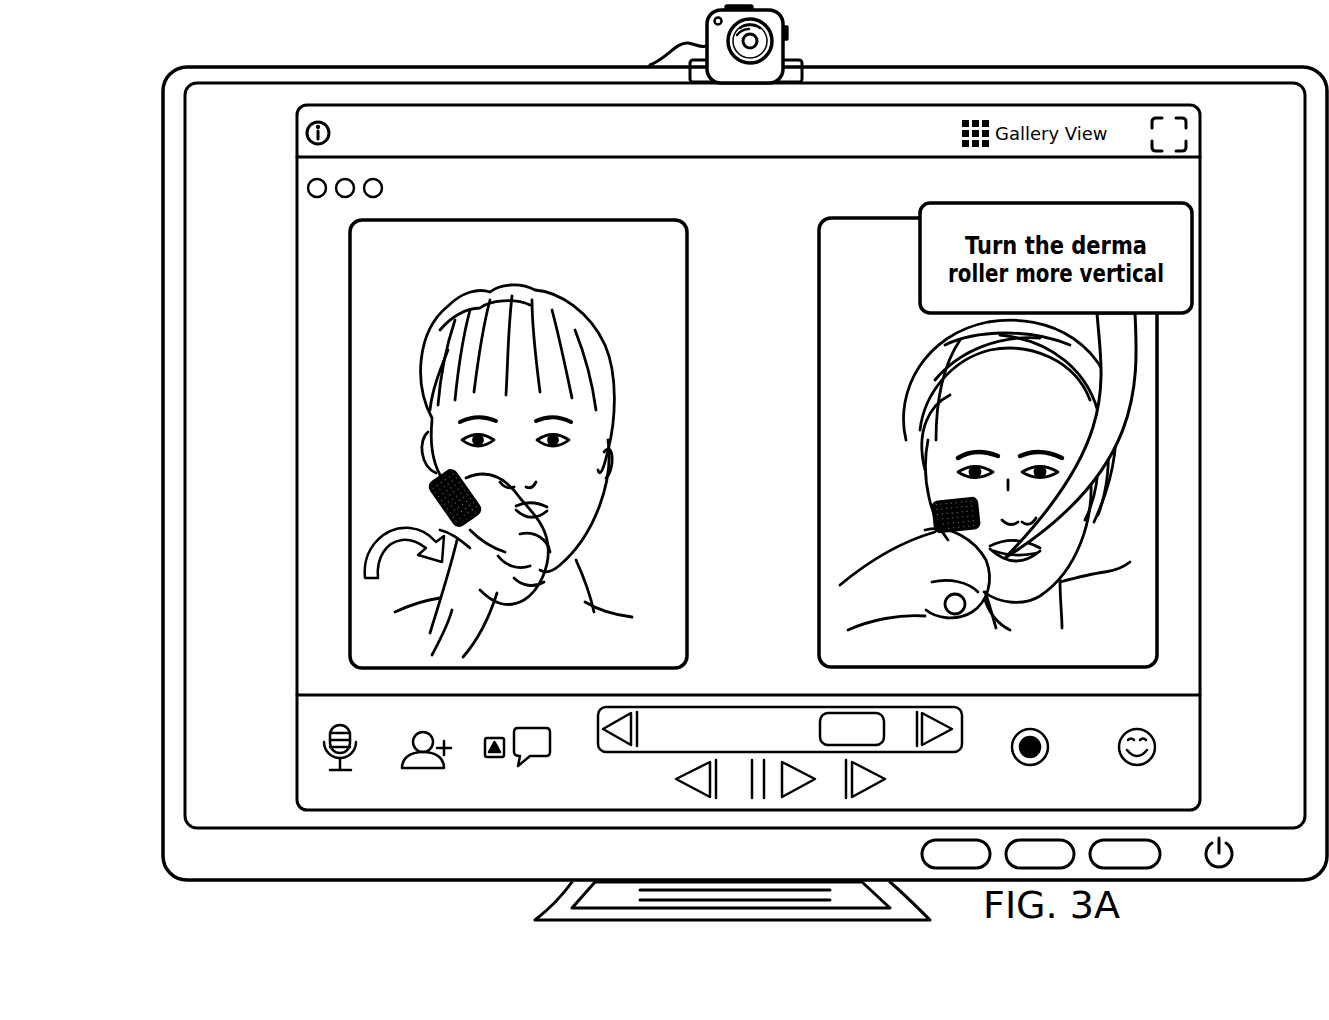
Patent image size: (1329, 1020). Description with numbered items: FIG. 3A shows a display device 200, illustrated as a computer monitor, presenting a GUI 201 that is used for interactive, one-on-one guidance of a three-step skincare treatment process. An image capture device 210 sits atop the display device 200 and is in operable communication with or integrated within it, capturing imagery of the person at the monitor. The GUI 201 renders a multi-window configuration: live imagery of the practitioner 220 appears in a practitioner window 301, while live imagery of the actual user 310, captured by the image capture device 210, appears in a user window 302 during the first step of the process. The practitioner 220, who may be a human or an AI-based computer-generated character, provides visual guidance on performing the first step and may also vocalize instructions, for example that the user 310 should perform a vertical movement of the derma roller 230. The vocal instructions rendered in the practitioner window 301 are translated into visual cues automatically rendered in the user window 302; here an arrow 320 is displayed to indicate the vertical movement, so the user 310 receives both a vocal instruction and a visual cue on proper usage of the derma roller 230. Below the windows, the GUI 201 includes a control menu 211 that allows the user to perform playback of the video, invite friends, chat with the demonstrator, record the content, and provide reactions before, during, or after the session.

The display device 200 is at (152, 194).
The GUI 201 is at (214, 743).
The image capture device 210 is at (788, 33).
The control menu 211 is at (771, 689).
The practitioner 220 is at (1100, 580).
The derma roller 230 is at (502, 582).
The practitioner window 301 is at (819, 440).
The user window 302 is at (688, 250).
The user 310 is at (540, 292).
The arrow 320 is at (412, 522).